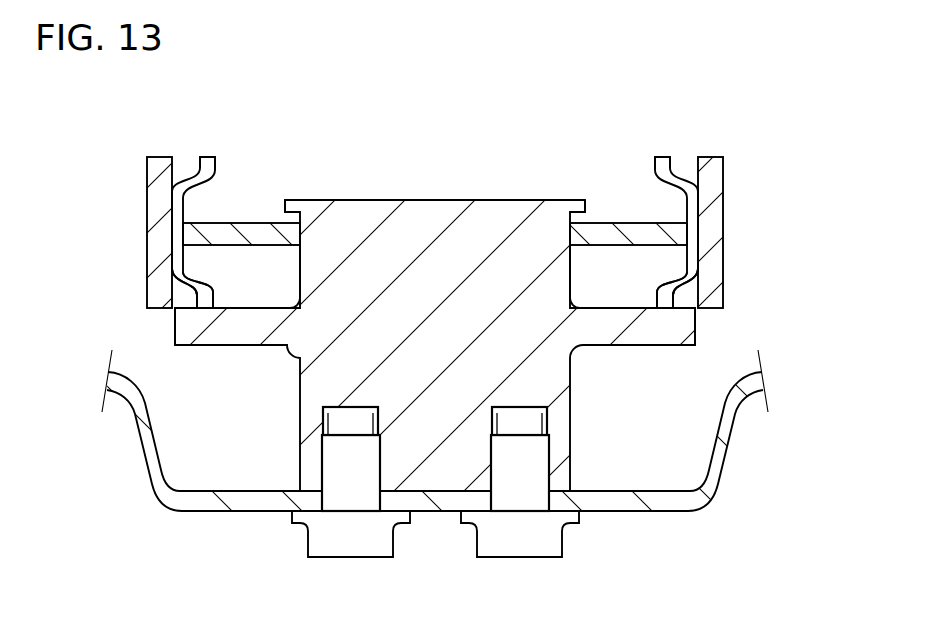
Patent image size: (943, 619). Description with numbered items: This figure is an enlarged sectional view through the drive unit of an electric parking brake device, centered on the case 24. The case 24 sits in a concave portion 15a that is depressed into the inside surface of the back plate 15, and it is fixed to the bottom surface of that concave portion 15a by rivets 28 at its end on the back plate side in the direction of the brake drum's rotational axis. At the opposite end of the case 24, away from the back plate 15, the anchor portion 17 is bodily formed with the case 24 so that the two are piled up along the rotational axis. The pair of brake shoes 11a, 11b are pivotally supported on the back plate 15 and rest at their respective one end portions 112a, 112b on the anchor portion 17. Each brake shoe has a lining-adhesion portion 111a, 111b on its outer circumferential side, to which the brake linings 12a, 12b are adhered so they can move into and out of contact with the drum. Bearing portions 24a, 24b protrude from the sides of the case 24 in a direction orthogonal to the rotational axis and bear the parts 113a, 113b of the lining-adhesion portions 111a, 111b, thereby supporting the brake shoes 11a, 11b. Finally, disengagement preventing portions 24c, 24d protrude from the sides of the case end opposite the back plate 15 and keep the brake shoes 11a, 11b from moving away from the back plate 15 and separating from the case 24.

The brake shoe 11a is at (208, 157).
The brake shoe 11b is at (662, 157).
The lining-adhesion portion 111a is at (173, 190).
The lining-adhesion portion 111b is at (697, 195).
The one end portion of brake shoe 112a is at (228, 232).
The one end portion of brake shoe 112b is at (630, 225).
The part of lining-adhesion portion 113a is at (205, 297).
The part of lining-adhesion portion 113b is at (675, 292).
The brake lining 12a is at (163, 233).
The brake lining 12b is at (712, 232).
The back plate 15 is at (108, 382).
The concave portion 15a is at (617, 504).
The anchor portion 17 is at (425, 213).
The case 24 is at (571, 403).
The bearing portion 24a is at (177, 325).
The bearing portion 24b is at (685, 333).
The disengagement preventing portion 24c is at (293, 208).
The disengagement preventing portion 24d is at (577, 208).
The rivet 28 is at (345, 542).